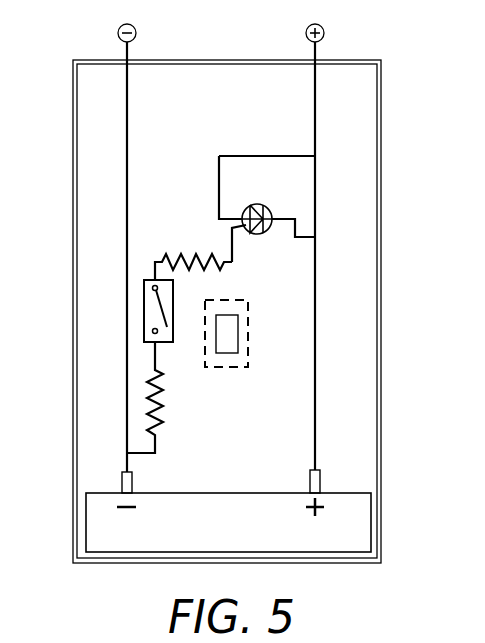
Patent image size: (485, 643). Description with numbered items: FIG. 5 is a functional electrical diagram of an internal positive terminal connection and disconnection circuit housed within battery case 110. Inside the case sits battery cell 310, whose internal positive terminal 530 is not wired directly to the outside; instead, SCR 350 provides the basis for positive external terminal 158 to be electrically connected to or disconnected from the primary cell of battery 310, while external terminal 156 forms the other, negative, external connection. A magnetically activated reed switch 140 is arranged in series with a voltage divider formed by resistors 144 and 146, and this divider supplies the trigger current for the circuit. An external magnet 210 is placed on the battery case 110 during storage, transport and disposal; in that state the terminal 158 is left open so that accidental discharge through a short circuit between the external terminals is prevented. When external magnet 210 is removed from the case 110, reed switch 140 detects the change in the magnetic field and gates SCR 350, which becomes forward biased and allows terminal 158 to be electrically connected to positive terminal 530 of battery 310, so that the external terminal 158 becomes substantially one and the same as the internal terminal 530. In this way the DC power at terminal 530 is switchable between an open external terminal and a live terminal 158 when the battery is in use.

The battery case 110 is at (381, 328).
The reed switch 140 is at (144, 305).
The resistor 144 is at (182, 252).
The resistor 146 is at (150, 398).
The external terminal 156 is at (120, 27).
The external terminal 158 is at (322, 27).
The external magnet 210 is at (246, 314).
The battery cell 310 is at (371, 520).
The SCR 350 is at (246, 209).
The internal positive terminal 530 is at (310, 487).